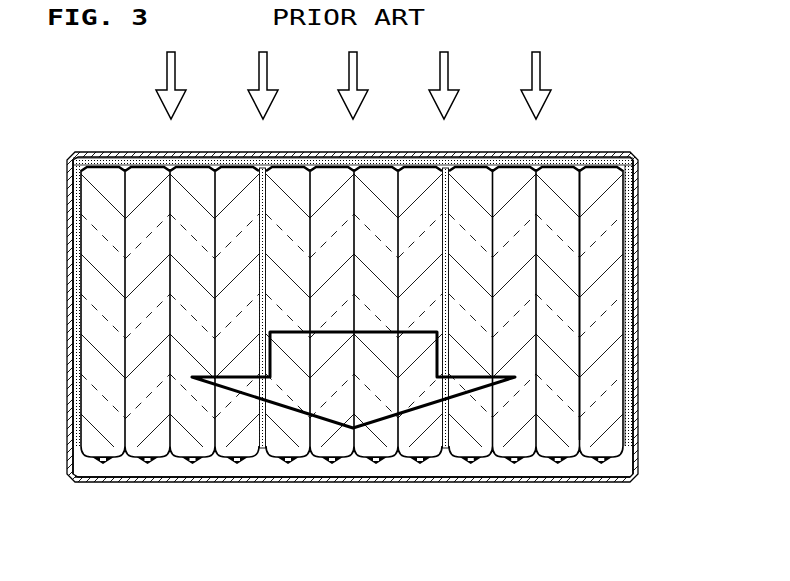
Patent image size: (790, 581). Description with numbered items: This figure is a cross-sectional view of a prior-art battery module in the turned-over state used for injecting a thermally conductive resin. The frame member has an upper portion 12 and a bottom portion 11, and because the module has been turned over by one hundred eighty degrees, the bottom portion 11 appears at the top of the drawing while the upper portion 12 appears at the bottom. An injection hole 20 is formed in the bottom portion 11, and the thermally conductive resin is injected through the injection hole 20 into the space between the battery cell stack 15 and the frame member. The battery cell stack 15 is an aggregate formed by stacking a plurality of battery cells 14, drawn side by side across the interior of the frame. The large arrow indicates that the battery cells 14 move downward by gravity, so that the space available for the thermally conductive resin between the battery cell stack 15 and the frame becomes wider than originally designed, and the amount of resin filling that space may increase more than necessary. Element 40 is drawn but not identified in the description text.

The bottom portion 11 is at (594, 152).
The upper portion 12 is at (478, 485).
The battery cell 14 is at (557, 266).
The battery cell stack 15 is at (580, 327).
The injection hole 20 is at (355, 158).
The partition member 40 is at (308, 168).